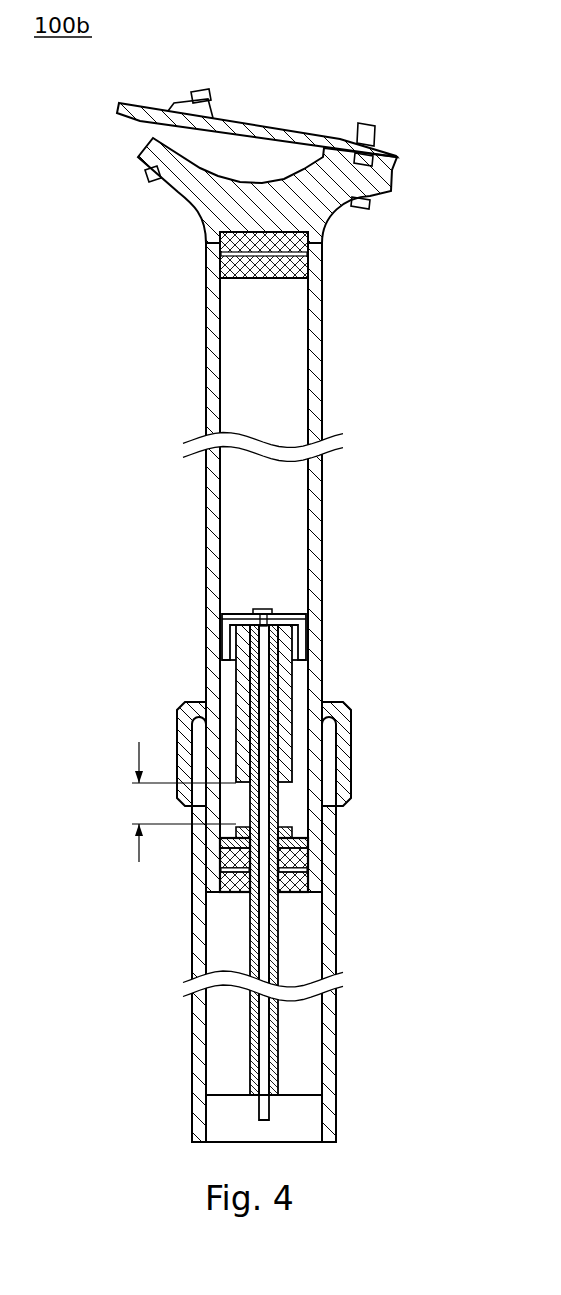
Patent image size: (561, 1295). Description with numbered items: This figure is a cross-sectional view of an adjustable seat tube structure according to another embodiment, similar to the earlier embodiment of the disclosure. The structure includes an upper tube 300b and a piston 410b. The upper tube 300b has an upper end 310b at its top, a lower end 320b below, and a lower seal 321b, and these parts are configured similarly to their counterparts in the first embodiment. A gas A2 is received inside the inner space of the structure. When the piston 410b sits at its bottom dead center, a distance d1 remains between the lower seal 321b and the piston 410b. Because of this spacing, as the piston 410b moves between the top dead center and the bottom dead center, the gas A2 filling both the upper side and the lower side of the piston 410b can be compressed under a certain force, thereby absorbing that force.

The upper end 310b is at (248, 212).
The upper tube 300b is at (206, 299).
The gas A2 is at (295, 350).
The piston 410b is at (286, 616).
The lower end 320b is at (291, 890).
The lower seal 321b is at (218, 862).
The distance d1 is at (168, 802).